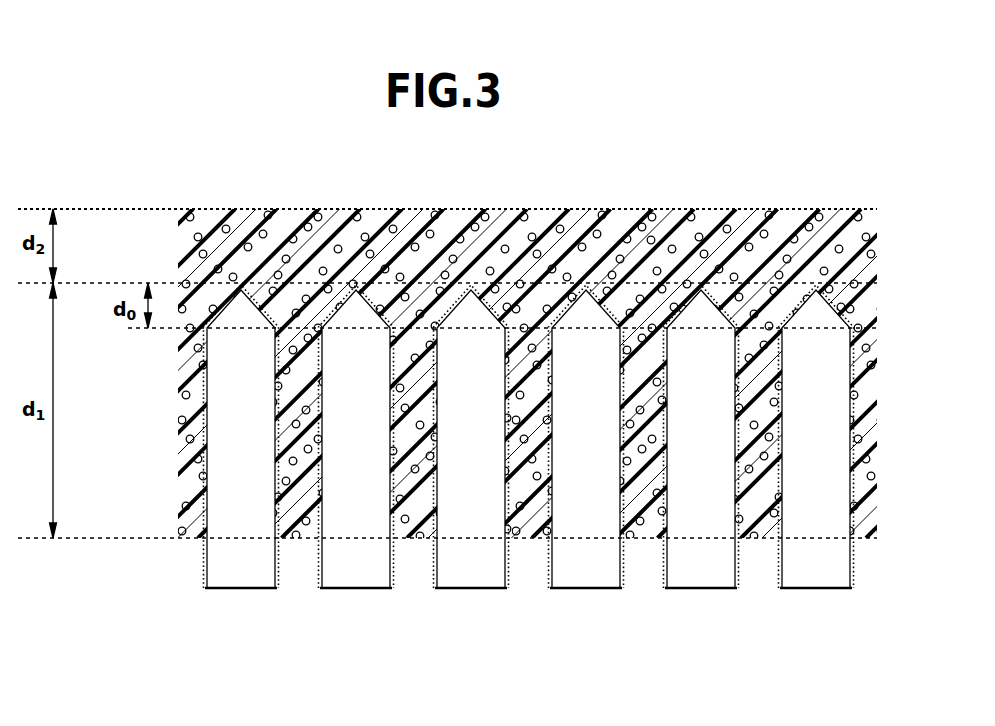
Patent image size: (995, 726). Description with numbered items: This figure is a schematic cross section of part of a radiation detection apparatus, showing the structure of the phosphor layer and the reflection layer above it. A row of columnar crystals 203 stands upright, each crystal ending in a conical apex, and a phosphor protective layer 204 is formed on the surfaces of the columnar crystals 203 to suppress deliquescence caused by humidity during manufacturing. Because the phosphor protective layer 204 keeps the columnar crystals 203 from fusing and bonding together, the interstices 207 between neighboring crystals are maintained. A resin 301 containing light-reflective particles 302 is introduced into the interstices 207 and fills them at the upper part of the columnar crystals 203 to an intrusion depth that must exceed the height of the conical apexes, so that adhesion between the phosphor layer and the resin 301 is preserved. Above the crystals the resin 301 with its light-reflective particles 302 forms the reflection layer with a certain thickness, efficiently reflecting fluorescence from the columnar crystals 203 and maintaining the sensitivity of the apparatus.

The columnar crystals 203 is at (818, 570).
The phosphor protective layer 204 is at (662, 570).
The interstices 207 is at (527, 568).
The resin 301 is at (753, 230).
The light-reflective particles 302 is at (651, 236).